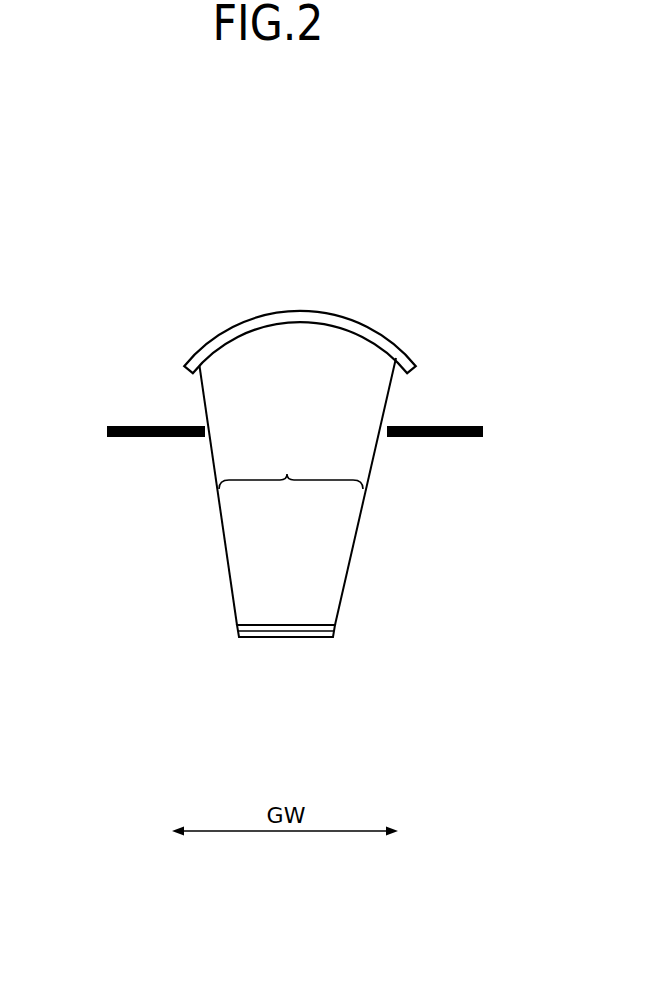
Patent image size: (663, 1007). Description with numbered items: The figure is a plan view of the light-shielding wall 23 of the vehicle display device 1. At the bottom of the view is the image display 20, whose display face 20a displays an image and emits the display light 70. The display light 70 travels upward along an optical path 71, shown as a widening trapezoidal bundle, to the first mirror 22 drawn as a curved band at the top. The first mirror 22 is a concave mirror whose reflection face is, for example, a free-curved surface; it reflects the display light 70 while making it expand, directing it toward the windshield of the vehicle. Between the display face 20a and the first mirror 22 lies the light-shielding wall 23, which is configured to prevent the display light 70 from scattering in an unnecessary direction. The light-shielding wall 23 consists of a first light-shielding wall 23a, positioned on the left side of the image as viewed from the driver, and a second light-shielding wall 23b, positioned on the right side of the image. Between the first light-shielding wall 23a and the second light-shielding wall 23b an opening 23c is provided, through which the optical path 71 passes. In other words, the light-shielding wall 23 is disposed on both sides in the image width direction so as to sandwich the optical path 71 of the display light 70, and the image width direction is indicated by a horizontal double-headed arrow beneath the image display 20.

The vehicle display device 1 is at (88, 150).
The image display 20 is at (302, 632).
The display face 20a is at (250, 622).
The first mirror 22 is at (295, 311).
The light-shielding wall 23 is at (273, 355).
The first light-shielding wall 23a is at (162, 424).
The second light-shielding wall 23b is at (448, 426).
The opening 23c is at (204, 432).
The display light 70 is at (363, 553).
The optical path 71 is at (291, 457).